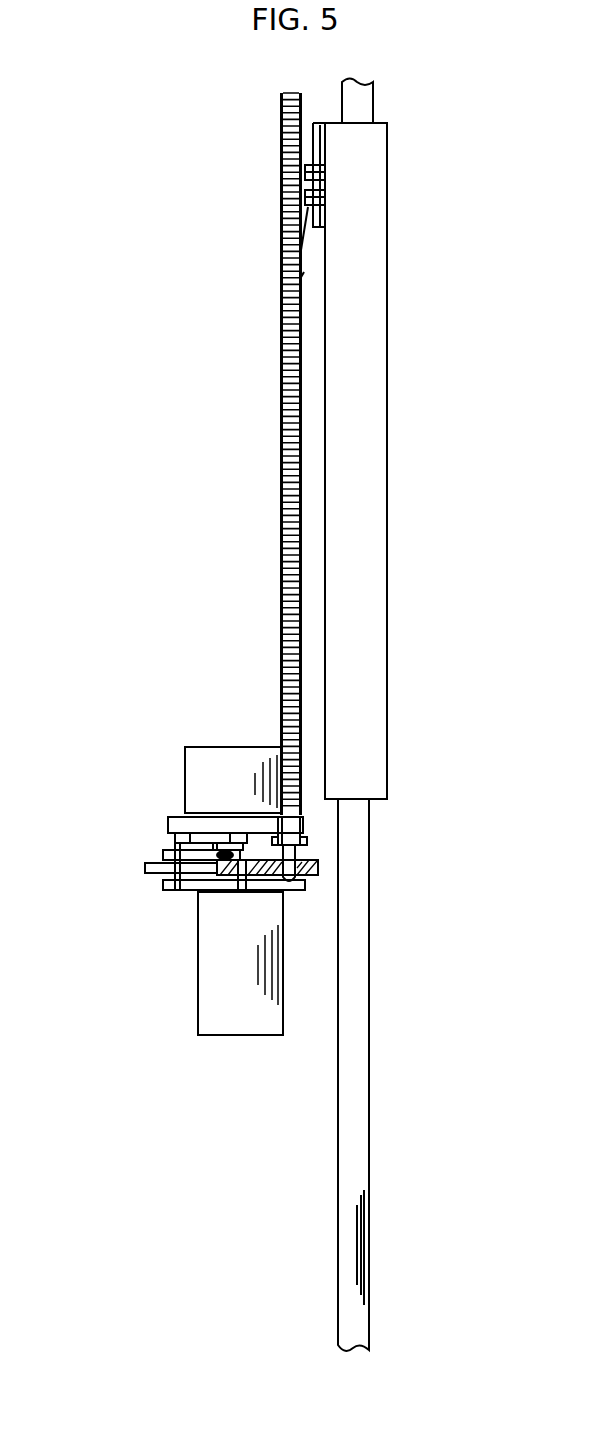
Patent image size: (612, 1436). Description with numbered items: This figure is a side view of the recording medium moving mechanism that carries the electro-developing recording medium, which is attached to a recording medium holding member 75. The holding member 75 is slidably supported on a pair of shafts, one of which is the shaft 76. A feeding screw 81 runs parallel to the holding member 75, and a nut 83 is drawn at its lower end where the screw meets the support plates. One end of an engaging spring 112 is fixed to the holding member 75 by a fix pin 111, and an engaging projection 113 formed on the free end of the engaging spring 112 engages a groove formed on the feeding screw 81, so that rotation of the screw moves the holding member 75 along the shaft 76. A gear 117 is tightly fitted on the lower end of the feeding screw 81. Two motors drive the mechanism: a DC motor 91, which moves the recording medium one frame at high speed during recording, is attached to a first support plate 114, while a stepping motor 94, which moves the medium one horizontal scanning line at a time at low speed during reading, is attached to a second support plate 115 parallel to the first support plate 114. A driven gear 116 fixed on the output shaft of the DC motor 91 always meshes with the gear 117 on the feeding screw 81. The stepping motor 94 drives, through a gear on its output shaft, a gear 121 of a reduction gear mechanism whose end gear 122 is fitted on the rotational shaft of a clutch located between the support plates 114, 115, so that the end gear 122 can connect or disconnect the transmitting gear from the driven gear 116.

The recording medium holding member 75 is at (365, 540).
The shaft 76 is at (357, 1130).
The feeding screw 81 is at (283, 493).
The nut 83 is at (303, 826).
The DC motor 91 is at (210, 1010).
The stepping motor 94 is at (225, 763).
The fix pin 111 is at (306, 174).
The engaging spring 112 is at (303, 256).
The engaging projection 113 is at (300, 279).
The first support plate 114 is at (163, 883).
The second support plate 115 is at (168, 822).
The driven gear 116 is at (165, 851).
The gear 117 is at (318, 868).
The gear 121 is at (198, 828).
The end gear 122 is at (180, 893).